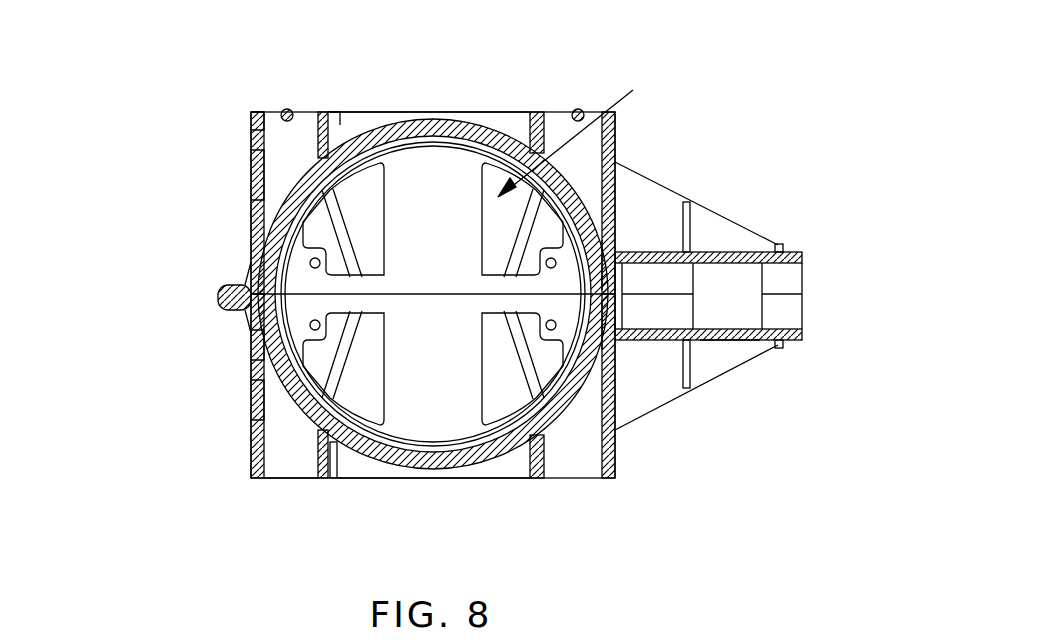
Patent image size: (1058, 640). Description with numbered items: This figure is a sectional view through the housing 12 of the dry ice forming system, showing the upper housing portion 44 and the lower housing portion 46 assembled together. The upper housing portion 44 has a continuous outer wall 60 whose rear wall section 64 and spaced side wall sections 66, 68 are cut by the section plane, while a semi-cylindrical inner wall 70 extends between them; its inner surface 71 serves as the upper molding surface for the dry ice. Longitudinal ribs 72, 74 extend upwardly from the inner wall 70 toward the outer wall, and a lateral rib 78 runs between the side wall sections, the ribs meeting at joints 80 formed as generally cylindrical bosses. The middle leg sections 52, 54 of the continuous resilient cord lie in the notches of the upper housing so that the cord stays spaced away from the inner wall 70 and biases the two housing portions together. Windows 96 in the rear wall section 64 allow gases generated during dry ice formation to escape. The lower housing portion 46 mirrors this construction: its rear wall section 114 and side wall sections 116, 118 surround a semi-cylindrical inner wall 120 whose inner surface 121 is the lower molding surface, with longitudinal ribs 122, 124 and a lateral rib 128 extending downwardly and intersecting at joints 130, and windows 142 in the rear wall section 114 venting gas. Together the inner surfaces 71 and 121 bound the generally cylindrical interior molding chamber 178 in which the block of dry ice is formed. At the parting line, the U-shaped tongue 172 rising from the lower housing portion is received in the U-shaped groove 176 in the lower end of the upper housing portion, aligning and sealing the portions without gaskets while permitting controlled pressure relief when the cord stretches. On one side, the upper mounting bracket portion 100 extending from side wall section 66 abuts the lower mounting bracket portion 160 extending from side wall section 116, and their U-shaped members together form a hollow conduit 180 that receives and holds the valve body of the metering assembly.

The housing 12 is at (745, 91).
The upper housing portion 44 is at (252, 178).
The lower housing portion 46 is at (252, 399).
The middle leg section 52 is at (582, 110).
The middle leg section 54 is at (288, 110).
The continuous outer wall 60 is at (258, 150).
The rear wall section 64 is at (600, 262).
The side wall section 66 is at (615, 118).
The side wall section 68 is at (253, 120).
The inner wall 70 is at (447, 113).
The inner surface 71 is at (440, 150).
The longitudinal rib 72 is at (535, 113).
The longitudinal rib 74 is at (322, 113).
The lateral rib 78 is at (495, 113).
The joint 80 is at (348, 118).
The window 96 is at (368, 218).
The upper mounting bracket portion 100 is at (724, 251).
The rear wall section 114 is at (597, 342).
The side wall section 116 is at (615, 466).
The side wall section 118 is at (256, 440).
The inner wall 120 is at (440, 466).
The inner surface 121 is at (418, 447).
The longitudinal rib 122 is at (532, 480).
The longitudinal rib 124 is at (325, 478).
The lateral rib 128 is at (282, 455).
The joint 130 is at (341, 455).
The window 142 is at (500, 378).
The lower mounting bracket portion 160 is at (726, 341).
The U-shaped tongue 172 is at (258, 348).
The U-shaped groove 176 is at (232, 286).
The interior molding chamber 178 is at (584, 125).
The hollow conduit 180 is at (740, 307).